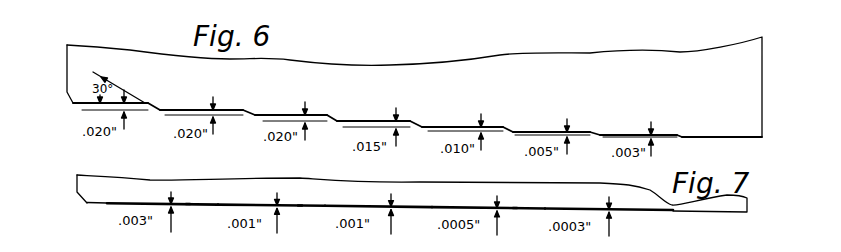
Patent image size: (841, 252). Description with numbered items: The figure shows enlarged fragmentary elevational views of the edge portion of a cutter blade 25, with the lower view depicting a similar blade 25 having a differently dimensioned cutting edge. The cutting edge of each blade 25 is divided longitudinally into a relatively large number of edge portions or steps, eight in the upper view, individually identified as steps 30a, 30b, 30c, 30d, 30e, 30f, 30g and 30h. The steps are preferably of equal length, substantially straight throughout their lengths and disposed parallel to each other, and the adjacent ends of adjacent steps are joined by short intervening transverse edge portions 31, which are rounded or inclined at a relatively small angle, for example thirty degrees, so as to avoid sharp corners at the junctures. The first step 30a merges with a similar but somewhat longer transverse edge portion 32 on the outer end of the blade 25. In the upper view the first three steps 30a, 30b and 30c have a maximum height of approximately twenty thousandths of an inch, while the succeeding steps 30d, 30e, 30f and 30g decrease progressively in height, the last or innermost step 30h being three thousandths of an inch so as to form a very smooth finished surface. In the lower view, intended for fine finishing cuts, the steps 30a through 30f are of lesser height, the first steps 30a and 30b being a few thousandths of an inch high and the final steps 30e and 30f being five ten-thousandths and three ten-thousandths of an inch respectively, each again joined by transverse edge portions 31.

In FIG. 6, the blade 25 is at (598, 57).
In FIG. 7, the blade 25 is at (132, 182).
In FIG. 6, the first step 30a is at (140, 102).
In FIG. 7, the first step 30a is at (107, 203).
In FIG. 6, the second step 30b is at (226, 109).
In FIG. 7, the second step 30b is at (218, 206).
In FIG. 6, the third step 30c is at (310, 116).
In FIG. 7, the third step 30c is at (325, 207).
In FIG. 6, the fourth step 30d is at (373, 121).
In FIG. 7, the fourth step 30d is at (432, 208).
In FIG. 6, the fifth step 30e is at (450, 126).
In FIG. 7, the fifth step 30e is at (545, 210).
In FIG. 6, the sixth step 30f is at (540, 131).
In FIG. 7, the sixth step 30f is at (678, 212).
In FIG. 6, the seventh step 30g is at (627, 134).
In FIG. 6, the eighth step 30h is at (717, 136).
In FIG. 6, the transverse edge portion 31 is at (249, 111).
In FIG. 7, the transverse edge portion 31 is at (188, 203).
In FIG. 6, the transverse edge portion on outer end of blade 32 is at (70, 103).